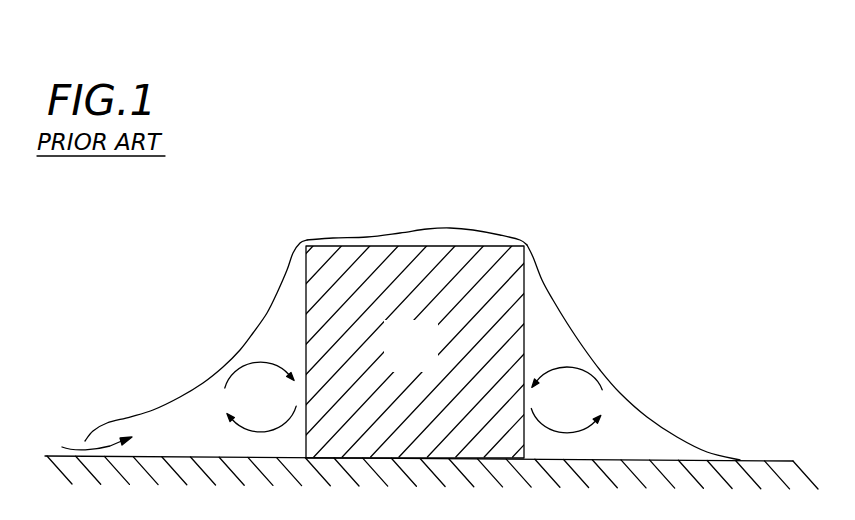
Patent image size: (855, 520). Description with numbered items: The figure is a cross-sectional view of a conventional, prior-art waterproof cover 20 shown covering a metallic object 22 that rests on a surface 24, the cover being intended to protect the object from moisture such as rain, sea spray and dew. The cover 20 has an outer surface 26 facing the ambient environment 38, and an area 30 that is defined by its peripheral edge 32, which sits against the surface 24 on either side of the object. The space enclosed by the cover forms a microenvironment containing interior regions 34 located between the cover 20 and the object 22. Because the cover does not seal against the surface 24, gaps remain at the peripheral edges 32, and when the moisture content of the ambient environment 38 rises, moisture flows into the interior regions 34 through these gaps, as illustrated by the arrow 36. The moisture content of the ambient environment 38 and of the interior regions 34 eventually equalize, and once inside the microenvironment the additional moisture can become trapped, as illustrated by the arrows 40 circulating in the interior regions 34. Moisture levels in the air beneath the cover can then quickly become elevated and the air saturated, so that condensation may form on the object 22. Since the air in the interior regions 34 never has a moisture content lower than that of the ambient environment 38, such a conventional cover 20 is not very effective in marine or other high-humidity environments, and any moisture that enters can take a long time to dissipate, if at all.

The waterproof cover 20 is at (549, 290).
The metallic object 22 is at (421, 355).
The surface 24 is at (780, 460).
The outer surface 26 is at (272, 307).
The area 30 is at (428, 229).
The peripheral edge 32 is at (85, 442).
The interior regions 34 is at (468, 240).
The arrow (inflow of moisture) 36 is at (55, 440).
The ambient environment 38 is at (654, 354).
The arrows (trapped moisture) 40 is at (285, 416).